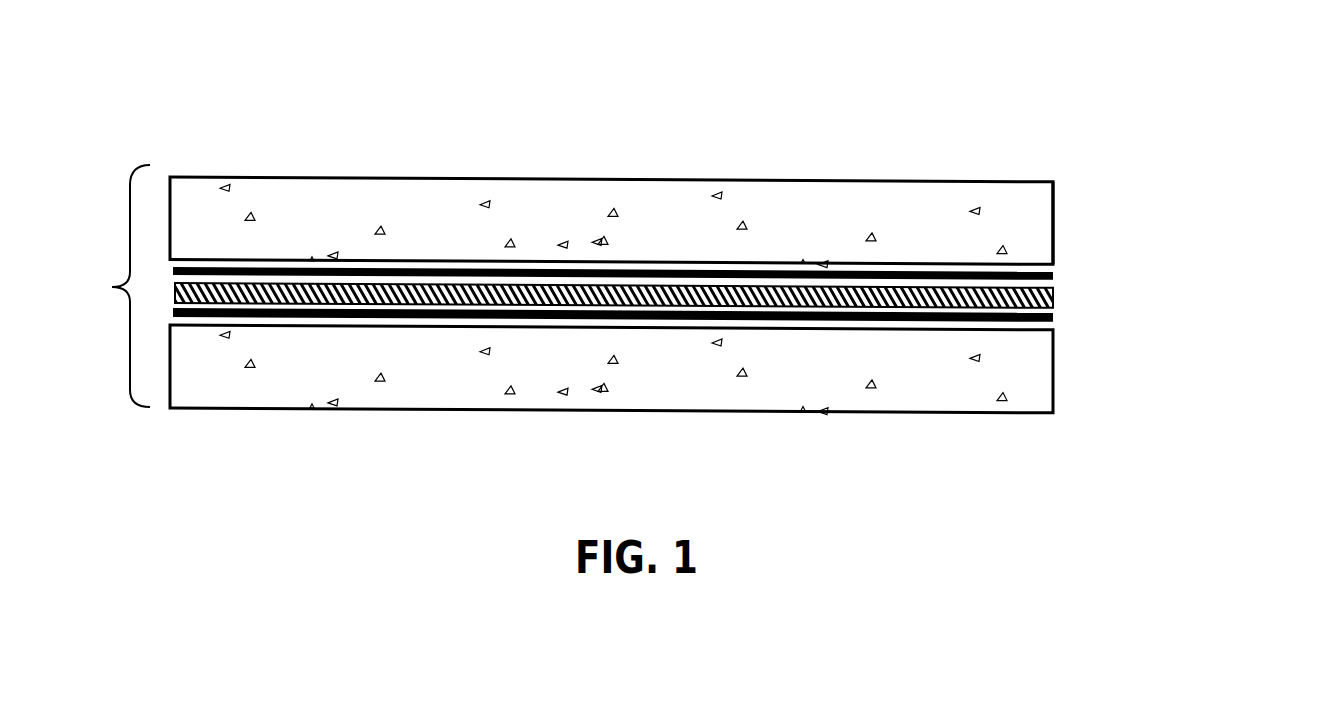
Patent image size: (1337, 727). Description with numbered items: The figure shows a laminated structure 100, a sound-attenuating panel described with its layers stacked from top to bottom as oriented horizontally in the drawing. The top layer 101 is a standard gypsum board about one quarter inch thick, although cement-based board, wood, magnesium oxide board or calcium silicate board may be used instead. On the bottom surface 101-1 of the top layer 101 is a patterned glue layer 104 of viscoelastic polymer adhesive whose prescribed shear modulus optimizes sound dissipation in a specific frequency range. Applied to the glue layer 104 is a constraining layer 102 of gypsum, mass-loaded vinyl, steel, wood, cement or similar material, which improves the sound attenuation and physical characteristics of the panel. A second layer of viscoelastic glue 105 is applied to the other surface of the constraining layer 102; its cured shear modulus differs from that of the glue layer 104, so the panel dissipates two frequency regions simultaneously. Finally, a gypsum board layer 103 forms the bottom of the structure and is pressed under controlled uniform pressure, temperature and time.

The laminated structure 100 is at (98, 286).
The top layer 101 is at (897, 223).
The bottom surface 101-1 is at (992, 265).
The constraining layer 102 is at (1057, 297).
The gypsum board layer 103 is at (950, 362).
The glue layer 104 is at (1060, 273).
The second layer of viscoelastic glue 105 is at (1060, 318).